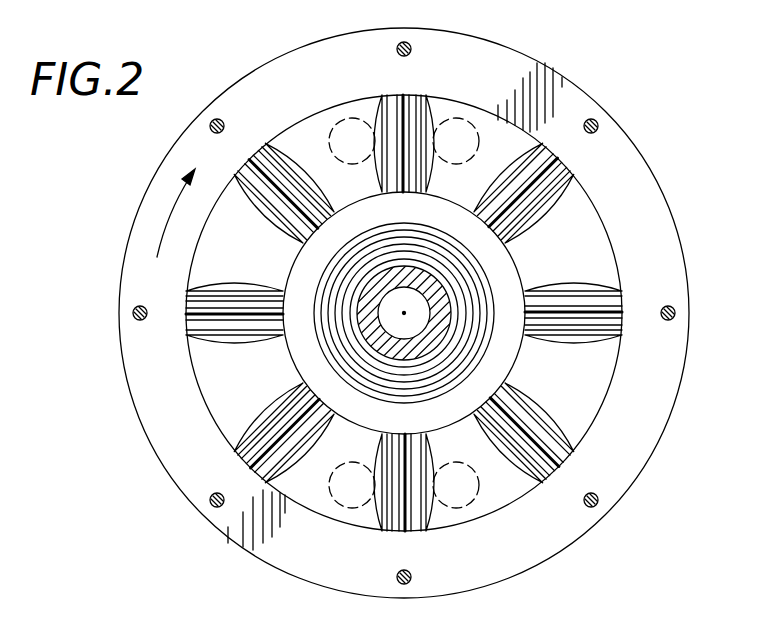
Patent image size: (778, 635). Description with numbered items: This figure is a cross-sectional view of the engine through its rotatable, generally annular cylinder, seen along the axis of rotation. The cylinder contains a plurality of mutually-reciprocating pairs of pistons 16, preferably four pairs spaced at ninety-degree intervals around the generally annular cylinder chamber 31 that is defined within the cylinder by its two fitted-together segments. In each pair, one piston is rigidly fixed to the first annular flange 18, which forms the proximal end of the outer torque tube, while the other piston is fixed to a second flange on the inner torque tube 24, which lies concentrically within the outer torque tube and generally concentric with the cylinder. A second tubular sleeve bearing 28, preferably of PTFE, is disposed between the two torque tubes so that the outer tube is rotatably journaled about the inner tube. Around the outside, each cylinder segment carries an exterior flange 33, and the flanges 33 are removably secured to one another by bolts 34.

The pistons 16 is at (268, 211).
The first annular flange 18 is at (357, 230).
The inner torque tube 24 is at (430, 342).
The second tubular sleeve bearing 28 is at (410, 360).
The cylinder chamber 31 is at (256, 265).
The exterior flange 33 is at (291, 58).
The bolts 34 is at (211, 127).